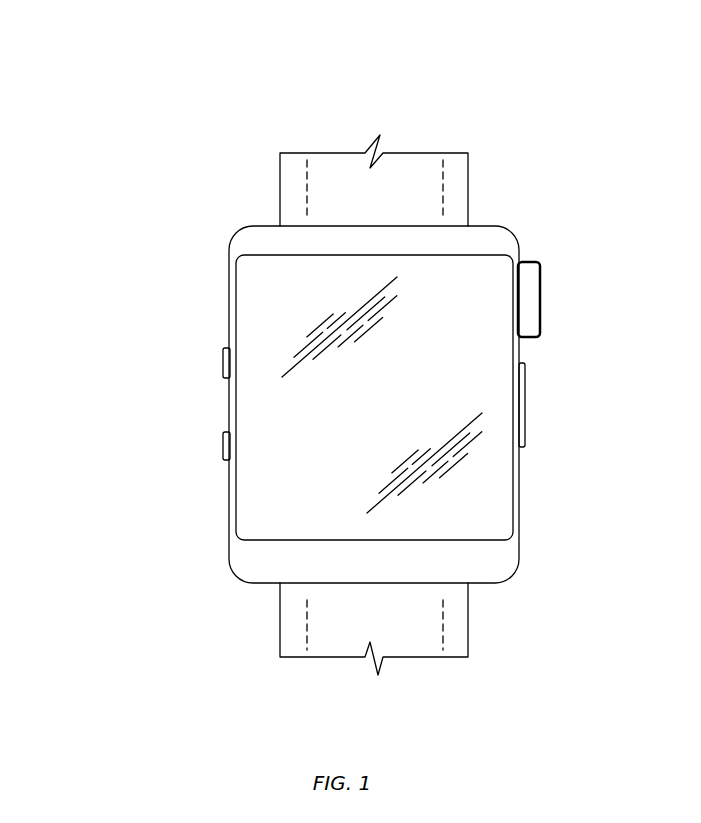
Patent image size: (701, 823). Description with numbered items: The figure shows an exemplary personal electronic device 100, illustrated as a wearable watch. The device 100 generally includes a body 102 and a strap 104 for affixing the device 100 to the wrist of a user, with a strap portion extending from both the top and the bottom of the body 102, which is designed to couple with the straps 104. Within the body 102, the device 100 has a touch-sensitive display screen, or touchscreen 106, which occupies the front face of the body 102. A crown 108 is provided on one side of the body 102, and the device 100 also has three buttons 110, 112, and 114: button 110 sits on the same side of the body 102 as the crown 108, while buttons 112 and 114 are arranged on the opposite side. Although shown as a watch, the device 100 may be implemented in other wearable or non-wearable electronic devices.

The personal electronic device 100 is at (346, 357).
The body 102 is at (480, 226).
The strap 104 is at (280, 190).
The touch-sensitive display screen 106 is at (275, 357).
The crown 108 is at (545, 297).
The button 110 is at (528, 401).
The button 112 is at (222, 372).
The button 114 is at (222, 448).